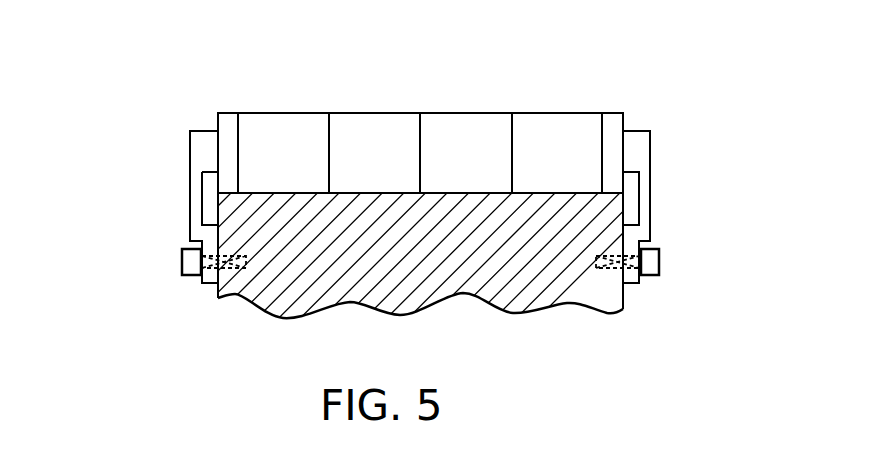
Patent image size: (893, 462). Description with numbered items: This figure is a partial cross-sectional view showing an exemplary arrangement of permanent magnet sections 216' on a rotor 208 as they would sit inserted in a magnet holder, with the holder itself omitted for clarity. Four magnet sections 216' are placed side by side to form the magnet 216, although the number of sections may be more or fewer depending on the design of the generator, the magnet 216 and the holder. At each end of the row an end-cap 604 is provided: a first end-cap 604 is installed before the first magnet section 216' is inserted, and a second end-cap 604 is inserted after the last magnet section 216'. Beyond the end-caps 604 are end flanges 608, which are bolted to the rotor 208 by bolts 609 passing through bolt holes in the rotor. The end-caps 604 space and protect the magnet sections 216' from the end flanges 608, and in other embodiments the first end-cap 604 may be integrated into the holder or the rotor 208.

The rotor 208 is at (527, 307).
The magnet 216 is at (420, 96).
The magnet section 216' is at (479, 118).
The end-cap 604 is at (610, 113).
The end flange 608 is at (722, 128).
The bolt 609 is at (722, 301).